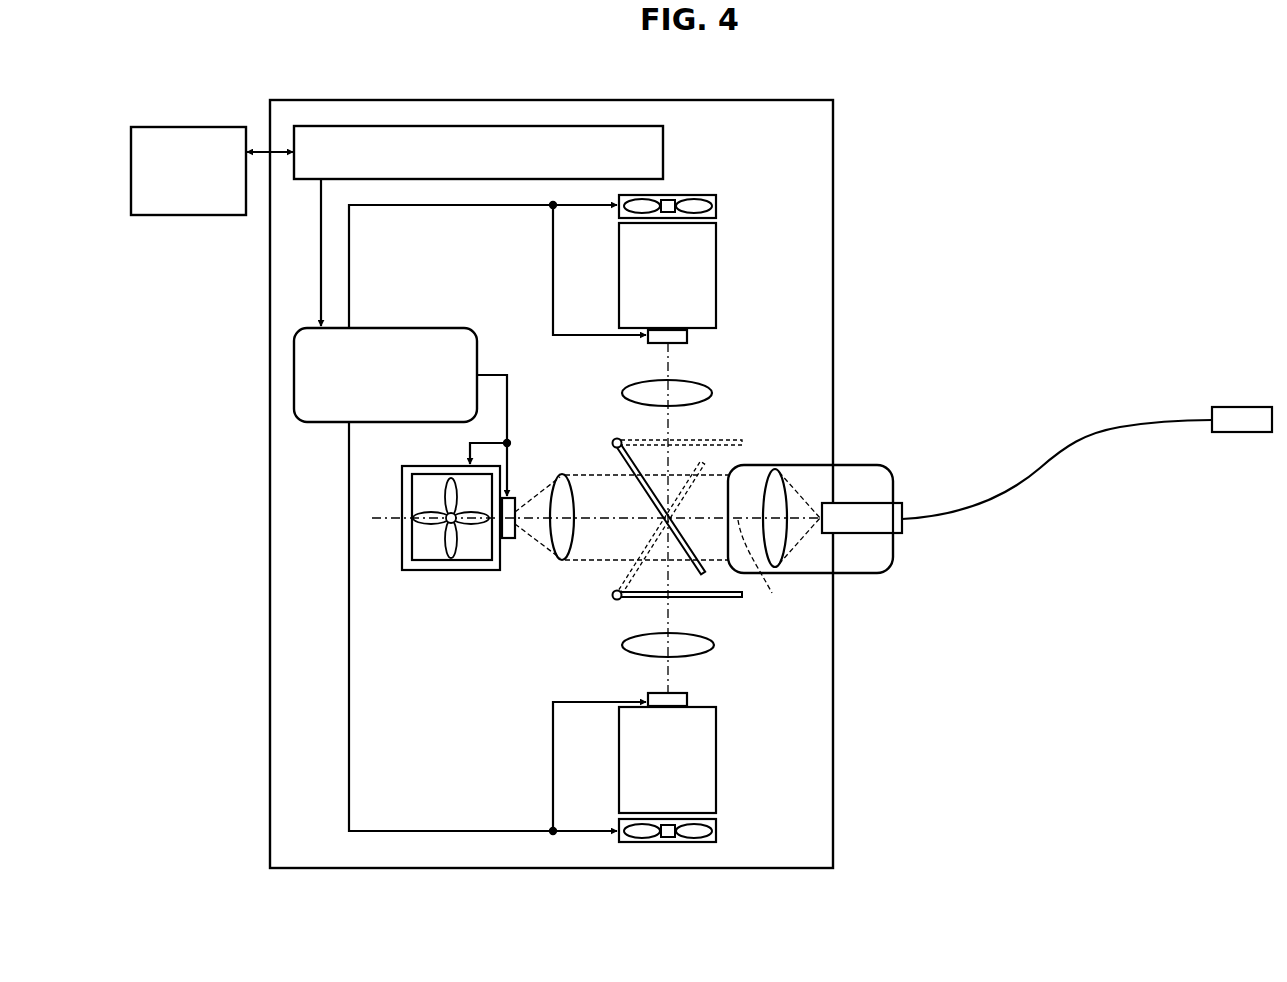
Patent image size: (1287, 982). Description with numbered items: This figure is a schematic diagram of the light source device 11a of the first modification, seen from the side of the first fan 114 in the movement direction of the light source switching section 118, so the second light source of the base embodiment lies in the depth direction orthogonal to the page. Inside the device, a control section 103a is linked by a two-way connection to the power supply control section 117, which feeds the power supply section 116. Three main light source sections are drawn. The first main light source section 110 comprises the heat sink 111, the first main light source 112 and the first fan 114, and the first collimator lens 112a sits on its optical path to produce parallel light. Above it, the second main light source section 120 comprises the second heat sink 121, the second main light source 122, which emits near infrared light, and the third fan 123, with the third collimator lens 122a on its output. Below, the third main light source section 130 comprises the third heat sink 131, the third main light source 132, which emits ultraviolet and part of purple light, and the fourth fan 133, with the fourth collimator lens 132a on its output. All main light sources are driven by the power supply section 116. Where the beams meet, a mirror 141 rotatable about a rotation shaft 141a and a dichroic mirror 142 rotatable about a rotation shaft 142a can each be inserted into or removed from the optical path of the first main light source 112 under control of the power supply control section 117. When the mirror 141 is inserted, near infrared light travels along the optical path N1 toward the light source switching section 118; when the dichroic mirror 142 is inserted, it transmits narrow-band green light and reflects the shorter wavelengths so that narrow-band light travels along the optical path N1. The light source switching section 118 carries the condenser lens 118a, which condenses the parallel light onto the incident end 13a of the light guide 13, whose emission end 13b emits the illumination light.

The light source device 11a is at (805, 100).
The control section 103a is at (200, 127).
The power supply control section 117 is at (663, 151).
The power supply section 116 is at (325, 422).
The second main light source section 120 is at (757, 163).
The second heat sink 121 is at (716, 274).
The second main light source 122 is at (687, 336).
The third collimator lens 122a is at (712, 393).
The third fan 123 is at (716, 206).
The first main light source section 110 is at (424, 638).
The heat sink 111 is at (455, 561).
The first main light source 112 is at (509, 540).
The first collimator lens 112a is at (562, 472).
The first fan 114 is at (420, 571).
The mirror 141 is at (652, 500).
The rotation shaft 141a is at (613, 439).
The dichroic mirror 142 is at (640, 590).
The rotation shaft 142a is at (616, 602).
The light source switching section 118 is at (862, 465).
The condenser lens 118a is at (778, 468).
The optical path N1 is at (760, 572).
The light guide 13 is at (1082, 437).
The incident end 13a is at (902, 504).
The emission end 13b is at (1240, 407).
The third main light source section 130 is at (742, 786).
The third heat sink 131 is at (716, 758).
The third main light source 132 is at (687, 699).
The fourth collimator lens 132a is at (714, 645).
The fourth fan 133 is at (716, 831).